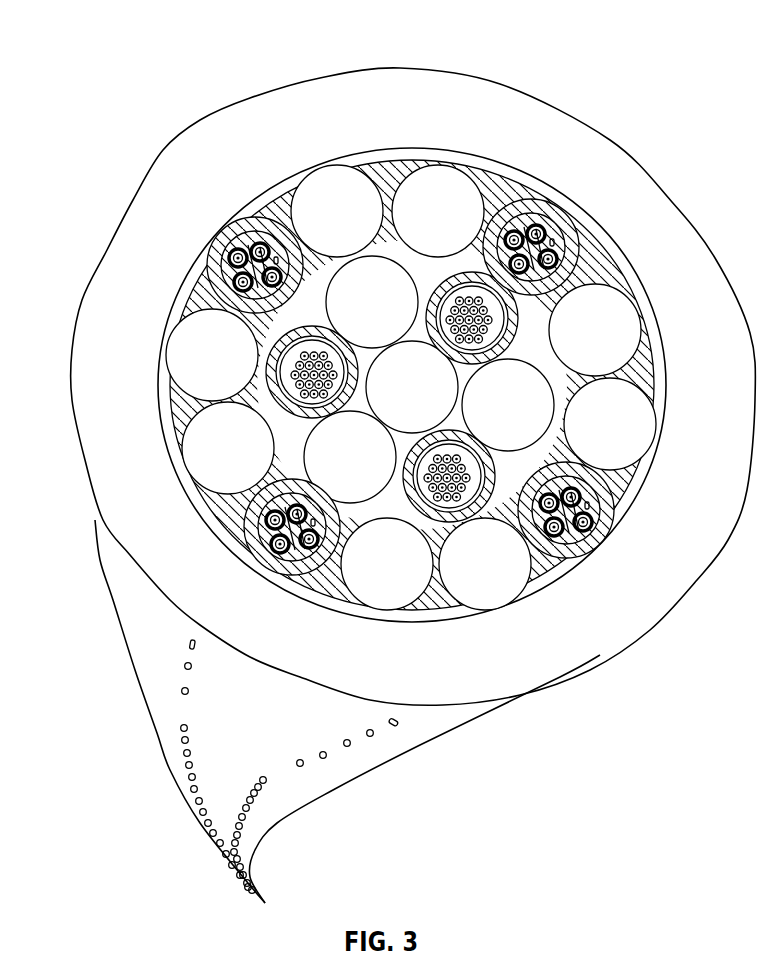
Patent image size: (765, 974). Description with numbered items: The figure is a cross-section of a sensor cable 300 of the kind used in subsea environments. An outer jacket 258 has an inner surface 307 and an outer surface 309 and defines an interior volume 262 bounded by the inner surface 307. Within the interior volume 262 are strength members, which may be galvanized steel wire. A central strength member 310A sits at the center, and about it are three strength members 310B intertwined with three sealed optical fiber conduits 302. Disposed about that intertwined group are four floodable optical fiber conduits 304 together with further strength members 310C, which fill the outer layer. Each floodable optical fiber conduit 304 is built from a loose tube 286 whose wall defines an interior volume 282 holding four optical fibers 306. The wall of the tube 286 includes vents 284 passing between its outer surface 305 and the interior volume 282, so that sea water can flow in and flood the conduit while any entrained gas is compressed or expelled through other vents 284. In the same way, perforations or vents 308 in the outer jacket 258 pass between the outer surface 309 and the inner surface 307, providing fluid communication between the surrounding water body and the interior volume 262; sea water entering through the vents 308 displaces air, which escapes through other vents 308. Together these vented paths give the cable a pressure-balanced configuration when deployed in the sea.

The outer jacket 258 is at (399, 68).
The interior volume 262 is at (170, 433).
The interior volume 282 is at (225, 221).
The vents 284 is at (247, 247).
The tube 286 is at (218, 254).
The sensor cable 300 is at (124, 34).
The sealed optical fiber conduit 302 is at (173, 422).
The floodable optical fiber conduit 304 is at (264, 212).
The outer surface 305 is at (218, 250).
The optical fiber 306 is at (262, 568).
The inner surface 307 is at (380, 166).
The vents 308 is at (186, 647).
The outer surface 309 is at (448, 722).
The central strength member 310A is at (384, 400).
The strength member 310B is at (344, 315).
The strength member 310C is at (309, 224).